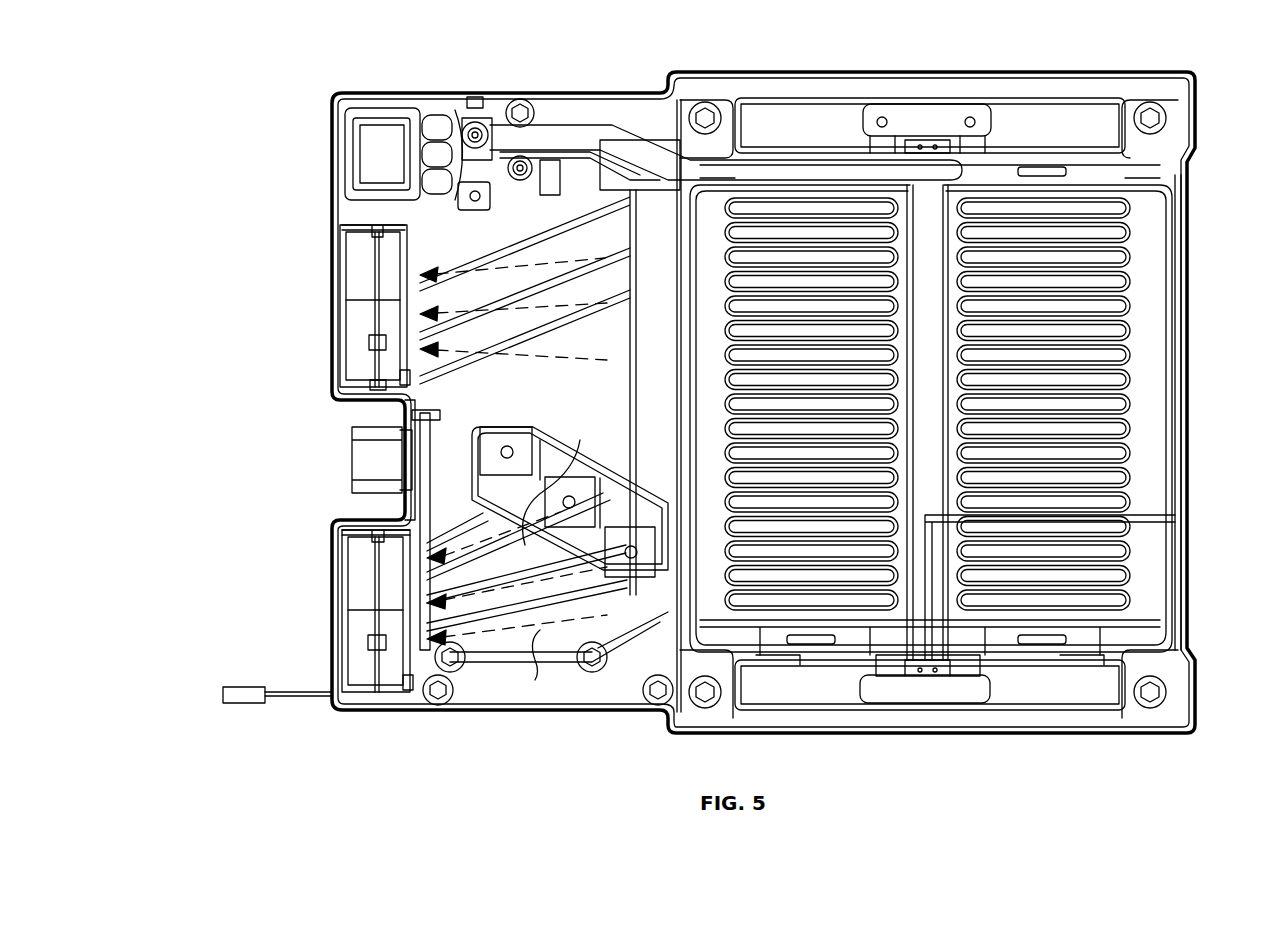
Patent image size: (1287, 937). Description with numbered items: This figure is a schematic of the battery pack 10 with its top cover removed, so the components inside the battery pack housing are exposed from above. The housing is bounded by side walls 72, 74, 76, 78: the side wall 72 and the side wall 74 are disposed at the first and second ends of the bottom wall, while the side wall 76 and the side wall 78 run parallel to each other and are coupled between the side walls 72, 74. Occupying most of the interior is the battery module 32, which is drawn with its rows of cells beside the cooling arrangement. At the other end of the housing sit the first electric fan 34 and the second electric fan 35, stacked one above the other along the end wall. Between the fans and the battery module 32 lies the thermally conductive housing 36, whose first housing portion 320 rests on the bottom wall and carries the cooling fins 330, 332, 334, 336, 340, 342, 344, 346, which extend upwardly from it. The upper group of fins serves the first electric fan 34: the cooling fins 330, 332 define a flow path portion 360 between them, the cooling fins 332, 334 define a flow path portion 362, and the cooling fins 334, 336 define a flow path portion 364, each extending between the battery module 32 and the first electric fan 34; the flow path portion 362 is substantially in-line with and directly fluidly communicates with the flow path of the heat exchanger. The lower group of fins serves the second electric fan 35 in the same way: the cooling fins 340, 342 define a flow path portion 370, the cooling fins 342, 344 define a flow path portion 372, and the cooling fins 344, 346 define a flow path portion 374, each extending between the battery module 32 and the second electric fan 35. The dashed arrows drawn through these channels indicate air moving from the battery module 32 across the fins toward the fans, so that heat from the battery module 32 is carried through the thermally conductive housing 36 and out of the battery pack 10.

The battery pack 10 is at (1050, 58).
The battery module 32 is at (1160, 230).
The first electric fan 34 is at (360, 265).
The second electric fan 35 is at (360, 566).
The thermally conductive housing 36 is at (508, 702).
The side wall 72 is at (1205, 142).
The side wall 74 is at (335, 150).
The side wall 76 is at (903, 733).
The side wall 78 is at (793, 73).
The first housing portion 320 is at (570, 690).
The cooling fin 330 is at (512, 222).
The cooling fin 332 is at (468, 297).
The cooling fin 334 is at (516, 340).
The cooling fin 336 is at (606, 395).
The cooling fin 340 is at (448, 535).
The cooling fin 342 is at (563, 478).
The cooling fin 344 is at (483, 620).
The cooling fin 346 is at (575, 622).
The flow path portion 360 is at (605, 250).
The flow path portion 362 is at (607, 300).
The flow path portion 364 is at (607, 357).
The flow path portion 370 is at (490, 560).
The flow path portion 372 is at (425, 580).
The flow path portion 374 is at (552, 622).